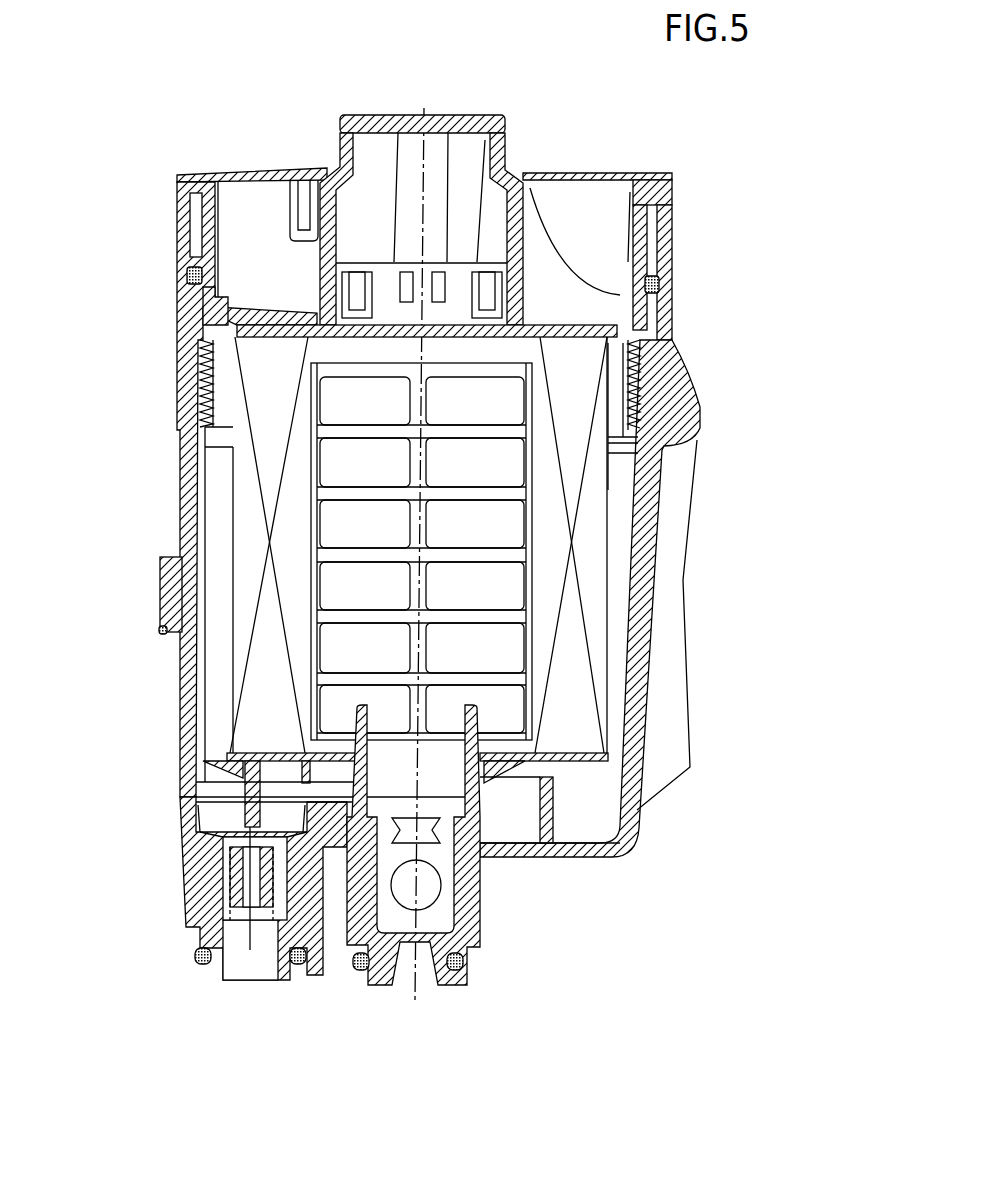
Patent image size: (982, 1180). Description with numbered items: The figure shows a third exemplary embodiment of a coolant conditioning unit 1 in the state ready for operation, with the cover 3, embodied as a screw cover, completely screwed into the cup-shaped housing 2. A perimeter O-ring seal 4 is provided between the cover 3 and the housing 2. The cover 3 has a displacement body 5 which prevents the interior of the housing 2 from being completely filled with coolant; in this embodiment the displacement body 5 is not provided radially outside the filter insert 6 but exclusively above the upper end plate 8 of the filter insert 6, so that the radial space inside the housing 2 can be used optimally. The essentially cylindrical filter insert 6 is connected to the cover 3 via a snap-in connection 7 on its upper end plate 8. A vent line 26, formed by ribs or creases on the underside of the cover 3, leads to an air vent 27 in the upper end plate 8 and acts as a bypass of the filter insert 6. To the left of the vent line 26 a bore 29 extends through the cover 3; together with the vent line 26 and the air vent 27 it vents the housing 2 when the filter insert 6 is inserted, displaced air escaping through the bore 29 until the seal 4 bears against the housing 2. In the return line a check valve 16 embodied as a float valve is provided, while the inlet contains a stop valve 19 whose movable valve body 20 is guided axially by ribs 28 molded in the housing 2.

The coolant conditioning unit 1 is at (205, 142).
The housing 2 is at (648, 461).
The cover 3 is at (500, 137).
The O-ring seal 4 is at (659, 283).
The displacement body 5 is at (567, 322).
The filter insert 6 is at (585, 565).
The snap-in connection 7 is at (323, 276).
The upper end plate 8 is at (617, 343).
The check valve 16 is at (437, 853).
The stop valve 19 is at (192, 834).
The valve body 20 is at (235, 867).
The vent line 26 is at (200, 339).
The air vent 27 is at (415, 325).
The ribs 28 is at (187, 923).
The bore 29 is at (200, 321).